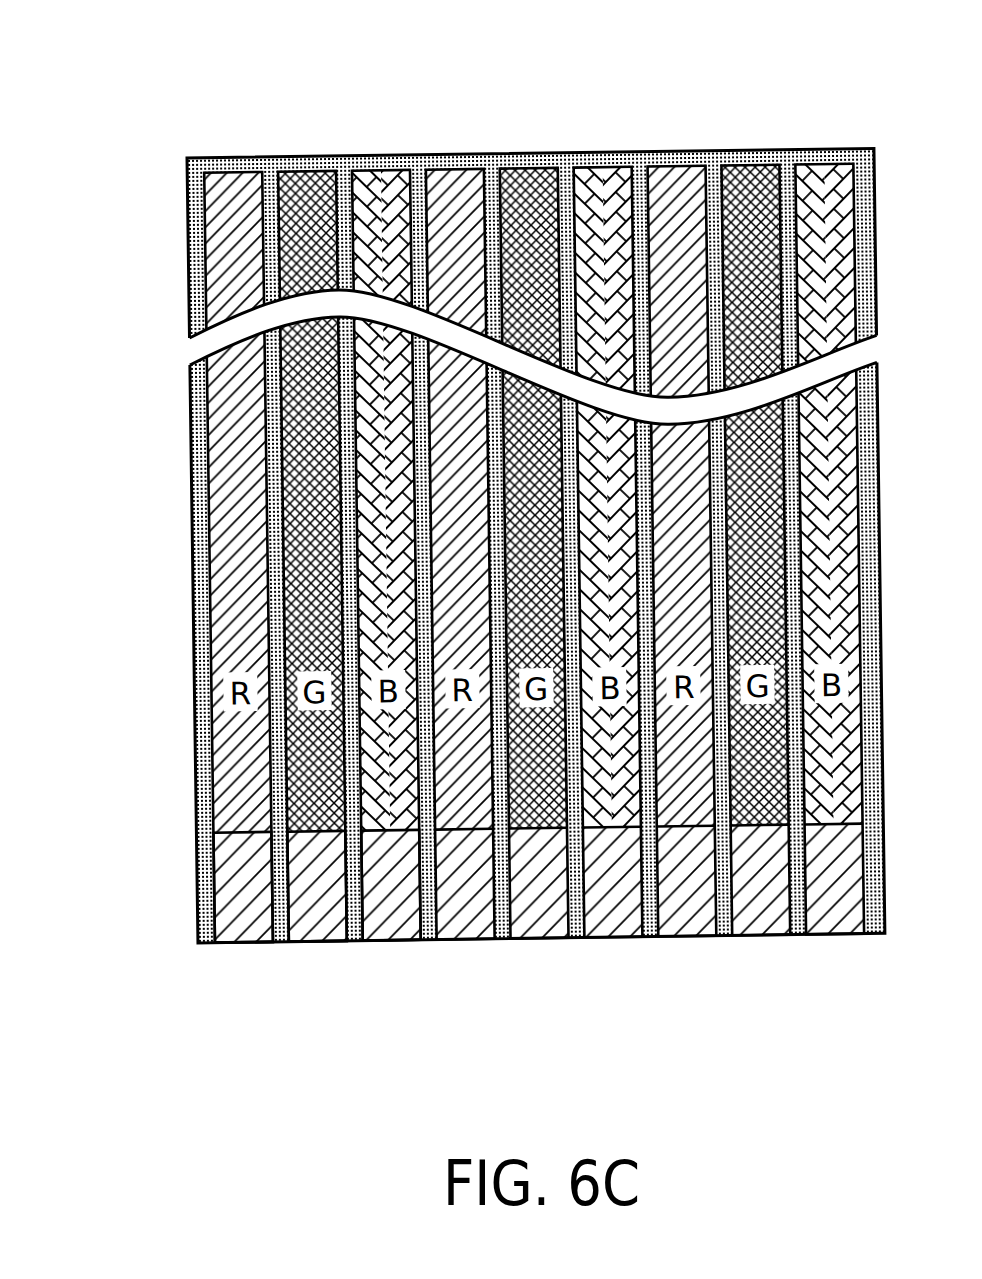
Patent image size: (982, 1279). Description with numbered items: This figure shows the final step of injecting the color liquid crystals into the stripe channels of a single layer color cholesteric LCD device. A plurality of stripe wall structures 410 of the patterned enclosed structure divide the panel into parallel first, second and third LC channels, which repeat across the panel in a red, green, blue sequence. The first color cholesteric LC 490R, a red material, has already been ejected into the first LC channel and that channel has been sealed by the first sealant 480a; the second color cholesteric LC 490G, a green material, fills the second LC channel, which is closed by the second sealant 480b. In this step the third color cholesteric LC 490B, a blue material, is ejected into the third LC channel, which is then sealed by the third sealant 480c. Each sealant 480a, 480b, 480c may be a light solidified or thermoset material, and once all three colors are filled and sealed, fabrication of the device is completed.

The stripe wall structure 410 is at (197, 742).
The first color cholesteric LC 490R is at (230, 205).
The second color cholesteric LC 490G is at (302, 207).
The third color cholesteric LC 490B is at (387, 203).
The first sealant 480a is at (236, 918).
The second sealant 480b is at (324, 915).
The third sealant 480c is at (387, 912).